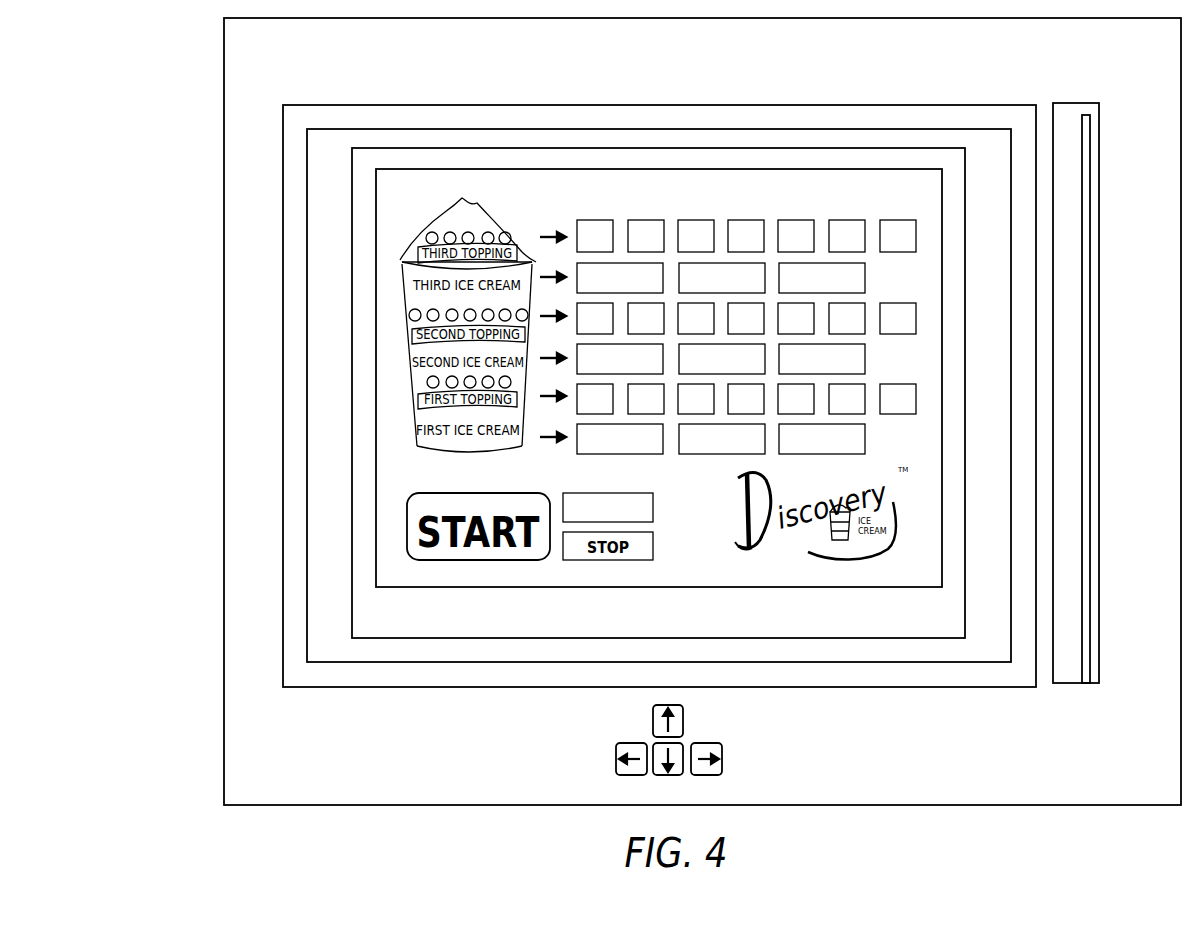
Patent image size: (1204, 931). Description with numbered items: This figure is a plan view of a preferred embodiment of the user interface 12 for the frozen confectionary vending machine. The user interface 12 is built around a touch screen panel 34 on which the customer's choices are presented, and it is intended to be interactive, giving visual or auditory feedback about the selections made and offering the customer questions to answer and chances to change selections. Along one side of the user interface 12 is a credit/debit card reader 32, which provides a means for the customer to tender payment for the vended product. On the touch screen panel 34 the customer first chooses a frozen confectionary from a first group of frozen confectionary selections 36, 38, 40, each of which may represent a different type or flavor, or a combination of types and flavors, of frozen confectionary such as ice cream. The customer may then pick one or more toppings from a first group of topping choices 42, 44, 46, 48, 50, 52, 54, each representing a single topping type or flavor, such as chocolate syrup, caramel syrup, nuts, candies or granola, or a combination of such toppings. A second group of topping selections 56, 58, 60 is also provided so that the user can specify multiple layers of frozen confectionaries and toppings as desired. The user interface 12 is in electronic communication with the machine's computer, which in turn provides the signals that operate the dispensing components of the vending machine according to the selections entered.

The user interface 12 is at (265, 72).
The credit/debit card reader 32 is at (1096, 535).
The touch screen panel 34 is at (762, 206).
The frozen confectionary selection 36 is at (638, 450).
The frozen confectionary selection 38 is at (740, 450).
The frozen confectionary selection 40 is at (840, 450).
The topping choice 42 is at (581, 410).
The topping choice 44 is at (632, 410).
The topping choice 46 is at (682, 410).
The topping choice 48 is at (732, 410).
The topping choice 50 is at (782, 410).
The topping choice 52 is at (833, 410).
The topping choice 54 is at (884, 410).
The topping selection 56 is at (638, 370).
The topping selection 58 is at (740, 370).
The topping selection 60 is at (840, 370).